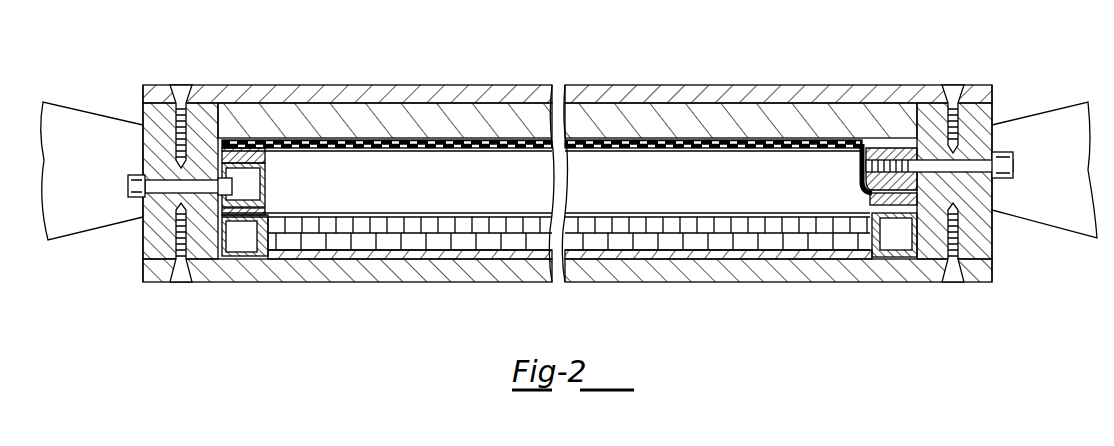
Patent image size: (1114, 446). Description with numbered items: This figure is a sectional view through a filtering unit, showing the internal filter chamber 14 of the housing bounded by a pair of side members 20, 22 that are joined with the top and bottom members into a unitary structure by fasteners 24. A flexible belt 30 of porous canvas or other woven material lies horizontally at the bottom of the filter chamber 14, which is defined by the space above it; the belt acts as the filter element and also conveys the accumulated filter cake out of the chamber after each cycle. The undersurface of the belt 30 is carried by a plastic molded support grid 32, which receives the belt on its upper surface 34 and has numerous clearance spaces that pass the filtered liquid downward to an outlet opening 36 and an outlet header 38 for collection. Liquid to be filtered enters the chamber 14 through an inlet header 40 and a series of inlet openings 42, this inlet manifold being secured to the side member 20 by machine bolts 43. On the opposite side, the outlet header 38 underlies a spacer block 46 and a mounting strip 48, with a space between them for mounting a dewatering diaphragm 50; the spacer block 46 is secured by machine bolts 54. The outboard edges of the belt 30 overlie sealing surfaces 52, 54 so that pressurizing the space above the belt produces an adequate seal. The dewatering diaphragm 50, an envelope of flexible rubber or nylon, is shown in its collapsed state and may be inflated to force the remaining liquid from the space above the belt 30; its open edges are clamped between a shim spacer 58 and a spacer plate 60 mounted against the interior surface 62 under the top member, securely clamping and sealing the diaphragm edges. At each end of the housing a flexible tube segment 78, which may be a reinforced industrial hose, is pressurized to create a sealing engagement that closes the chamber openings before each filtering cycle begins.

The filter chamber 14 is at (472, 190).
The side member 20 is at (143, 147).
The side member 22 is at (990, 113).
The fasteners 24 is at (186, 84).
The flexible belt 30 is at (715, 212).
The support grid 32 is at (612, 245).
The upper surface 34 is at (665, 305).
The outlet opening 36 is at (883, 250).
The outlet header 38 is at (907, 262).
The inlet header 40 is at (245, 150).
The inlet openings 42 is at (268, 185).
The machine bolts 43 is at (128, 186).
The spacer block 46 is at (878, 176).
The mounting strip 48 is at (882, 196).
The dewatering diaphragm 50 is at (710, 130).
The sealing surface 52 is at (247, 215).
The machine bolts 54 is at (1010, 157).
The shim spacer 58 is at (262, 153).
The spacer plate 60 is at (347, 110).
The interior surface 62 is at (452, 107).
The flexible tube segment 78 is at (103, 68).